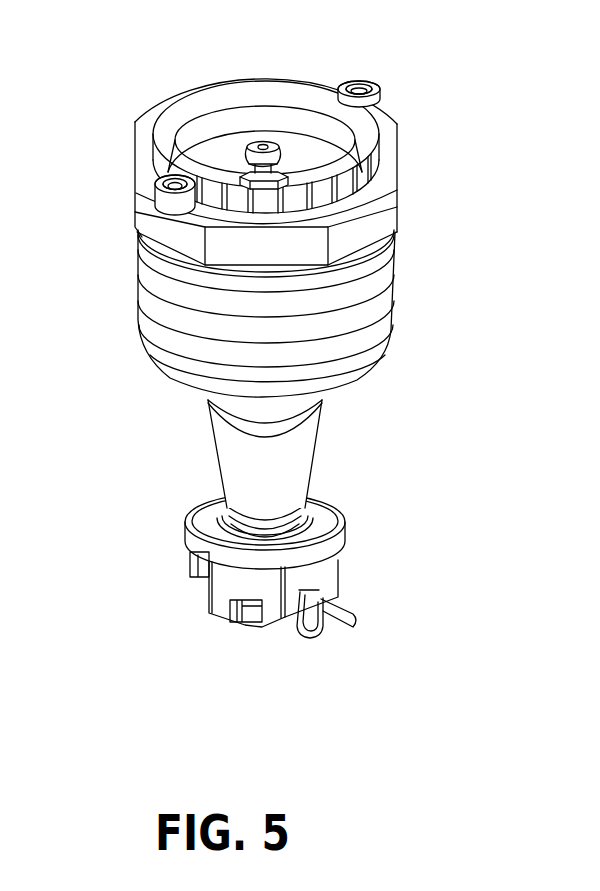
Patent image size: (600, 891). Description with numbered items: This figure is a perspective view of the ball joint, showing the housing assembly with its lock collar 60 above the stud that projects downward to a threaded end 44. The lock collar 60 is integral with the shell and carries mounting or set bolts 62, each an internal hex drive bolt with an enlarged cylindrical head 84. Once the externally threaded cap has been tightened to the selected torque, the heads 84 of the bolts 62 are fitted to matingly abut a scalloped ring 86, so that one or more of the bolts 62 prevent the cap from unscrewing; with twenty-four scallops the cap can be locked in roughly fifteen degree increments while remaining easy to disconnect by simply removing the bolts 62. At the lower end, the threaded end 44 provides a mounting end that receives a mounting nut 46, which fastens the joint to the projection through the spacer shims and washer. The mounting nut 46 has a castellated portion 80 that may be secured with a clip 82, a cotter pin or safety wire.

The threaded end 44 is at (250, 625).
The mounting nut 46 is at (336, 572).
The lock collar 60 is at (165, 237).
The mounting bolt 62 is at (362, 90).
The castellated portion 80 is at (232, 615).
The clip 82 is at (318, 638).
The enlarged cylindrical head 84 is at (165, 206).
The scalloped ring 86 is at (368, 150).